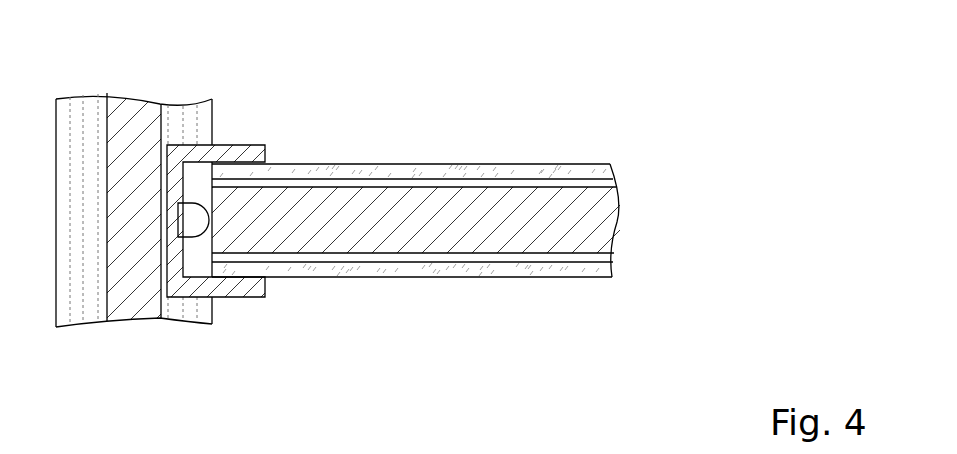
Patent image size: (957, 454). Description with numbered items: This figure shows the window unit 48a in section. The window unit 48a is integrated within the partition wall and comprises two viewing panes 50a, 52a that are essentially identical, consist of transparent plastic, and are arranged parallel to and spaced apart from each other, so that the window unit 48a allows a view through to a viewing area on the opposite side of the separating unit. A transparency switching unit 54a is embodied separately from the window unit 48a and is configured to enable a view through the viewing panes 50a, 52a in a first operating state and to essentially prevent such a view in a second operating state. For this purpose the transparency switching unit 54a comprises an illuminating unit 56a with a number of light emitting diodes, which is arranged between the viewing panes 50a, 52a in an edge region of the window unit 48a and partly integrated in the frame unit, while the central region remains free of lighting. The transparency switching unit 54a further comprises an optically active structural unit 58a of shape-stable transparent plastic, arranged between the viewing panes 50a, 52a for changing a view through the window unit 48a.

The window unit 48a is at (582, 280).
The viewing pane 50a is at (333, 266).
The viewing pane 52a is at (415, 176).
The transparency switching unit 54a is at (478, 227).
The illuminating unit 56a is at (198, 239).
The optically active structural unit 58a is at (450, 209).